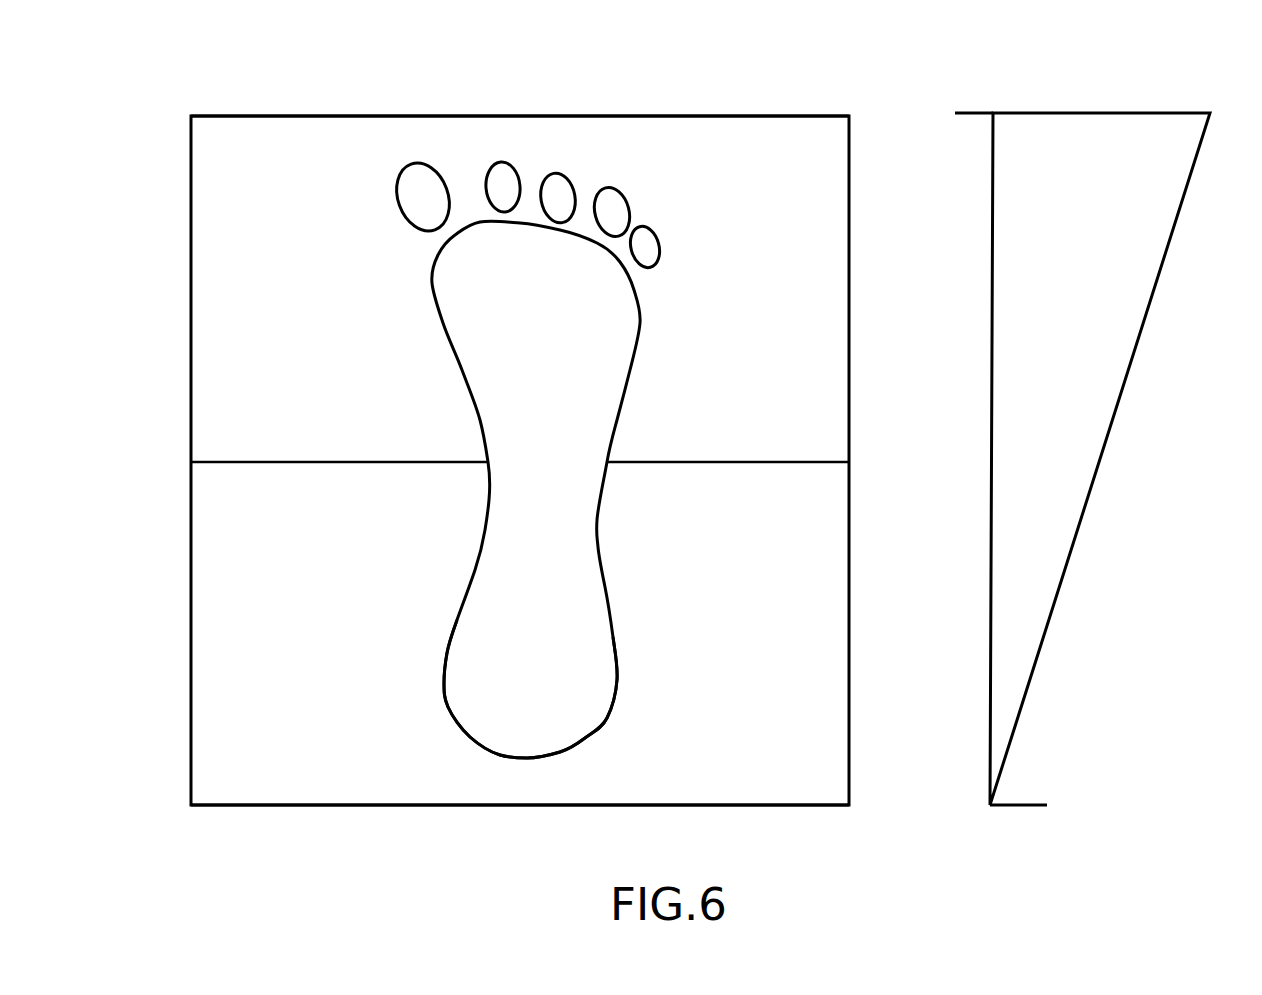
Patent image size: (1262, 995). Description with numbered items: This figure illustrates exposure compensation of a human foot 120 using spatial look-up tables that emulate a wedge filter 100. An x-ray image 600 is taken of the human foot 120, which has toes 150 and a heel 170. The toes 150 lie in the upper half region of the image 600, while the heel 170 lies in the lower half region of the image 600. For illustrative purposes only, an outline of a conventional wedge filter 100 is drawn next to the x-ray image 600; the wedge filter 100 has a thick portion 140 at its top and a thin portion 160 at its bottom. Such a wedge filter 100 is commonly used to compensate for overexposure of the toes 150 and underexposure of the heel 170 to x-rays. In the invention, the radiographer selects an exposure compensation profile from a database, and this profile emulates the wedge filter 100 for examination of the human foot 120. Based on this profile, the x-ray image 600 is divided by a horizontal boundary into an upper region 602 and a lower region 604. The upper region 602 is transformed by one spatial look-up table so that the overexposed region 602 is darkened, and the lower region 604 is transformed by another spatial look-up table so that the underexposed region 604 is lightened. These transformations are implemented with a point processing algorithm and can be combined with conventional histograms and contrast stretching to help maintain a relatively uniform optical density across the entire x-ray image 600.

The wedge filter 100 is at (1148, 90).
The human foot 120 is at (600, 560).
The thick portion 140 is at (957, 92).
The toes 150 is at (652, 197).
The thin portion 160 is at (1037, 787).
The heel 170 is at (636, 705).
The x-ray image 600 is at (536, 885).
The upper region 602 is at (191, 338).
The lower region 604 is at (191, 683).